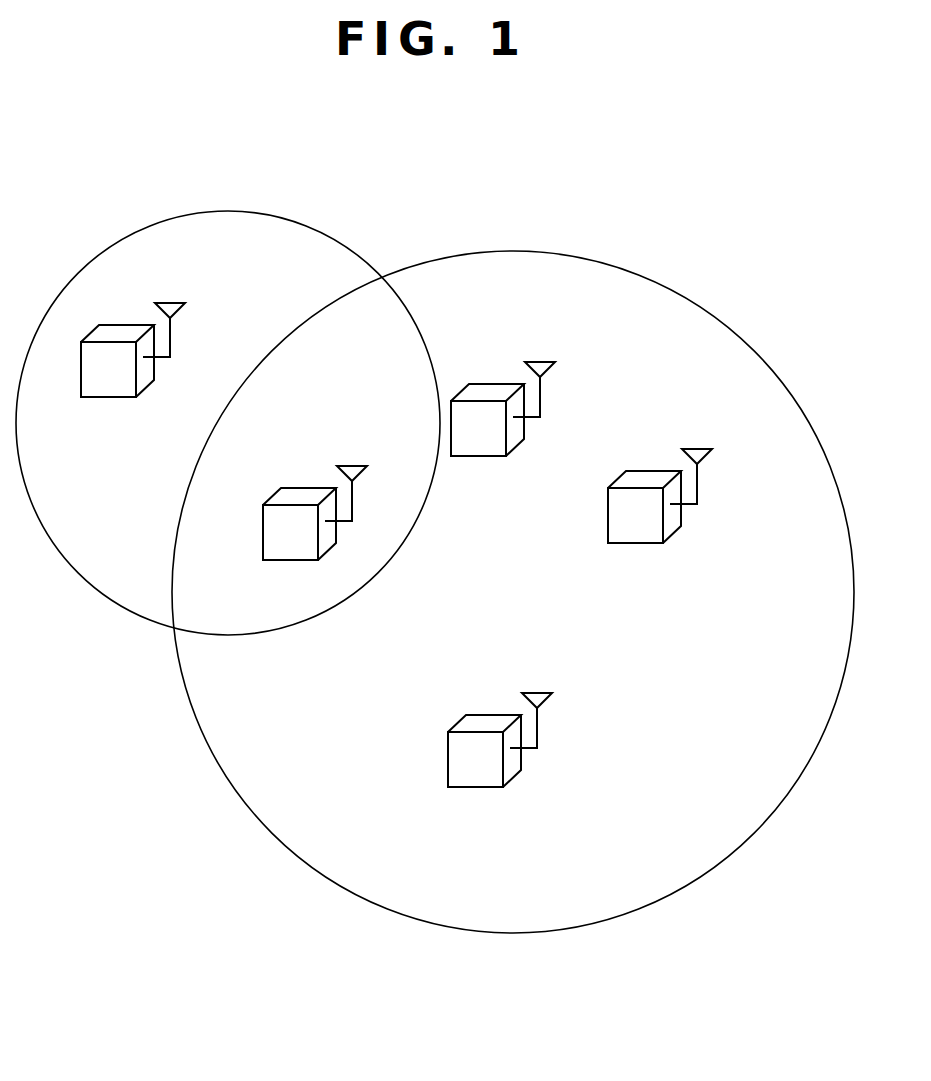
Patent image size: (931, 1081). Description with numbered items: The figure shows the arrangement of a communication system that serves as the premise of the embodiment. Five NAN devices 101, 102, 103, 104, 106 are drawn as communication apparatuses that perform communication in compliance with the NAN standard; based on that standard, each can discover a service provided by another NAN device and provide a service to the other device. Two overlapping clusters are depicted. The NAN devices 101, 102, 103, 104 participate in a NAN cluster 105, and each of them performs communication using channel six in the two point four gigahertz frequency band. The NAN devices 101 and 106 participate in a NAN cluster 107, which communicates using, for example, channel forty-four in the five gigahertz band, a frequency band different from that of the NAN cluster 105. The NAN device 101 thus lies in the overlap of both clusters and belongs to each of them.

The NAN device 101 is at (303, 488).
The NAN device 102 is at (491, 384).
The NAN device 103 is at (648, 471).
The NAN device 104 is at (488, 715).
The NAN cluster 105 is at (627, 271).
The NAN device 106 is at (121, 325).
The NAN cluster 107 is at (283, 215).